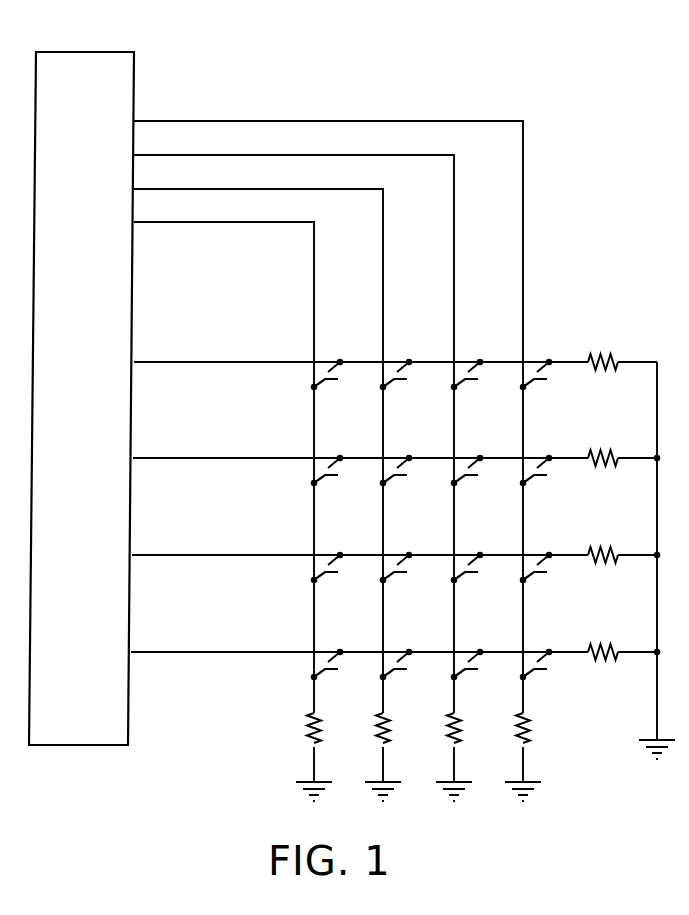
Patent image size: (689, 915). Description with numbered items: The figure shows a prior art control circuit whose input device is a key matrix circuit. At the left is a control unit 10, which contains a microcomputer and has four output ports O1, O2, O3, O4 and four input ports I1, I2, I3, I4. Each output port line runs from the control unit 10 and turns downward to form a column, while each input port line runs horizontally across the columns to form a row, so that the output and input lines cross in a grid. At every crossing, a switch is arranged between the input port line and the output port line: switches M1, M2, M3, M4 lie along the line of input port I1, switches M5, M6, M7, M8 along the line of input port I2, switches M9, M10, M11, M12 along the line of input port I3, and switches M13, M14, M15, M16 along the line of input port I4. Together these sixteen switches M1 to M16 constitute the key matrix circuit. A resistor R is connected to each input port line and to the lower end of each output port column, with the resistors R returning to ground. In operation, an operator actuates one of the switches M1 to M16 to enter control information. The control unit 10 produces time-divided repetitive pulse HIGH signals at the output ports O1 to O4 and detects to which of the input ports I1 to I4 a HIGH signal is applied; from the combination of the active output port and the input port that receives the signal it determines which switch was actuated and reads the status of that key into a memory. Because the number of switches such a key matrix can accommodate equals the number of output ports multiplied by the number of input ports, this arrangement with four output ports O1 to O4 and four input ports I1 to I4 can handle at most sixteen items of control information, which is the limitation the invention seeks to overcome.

The control unit 10 is at (107, 52).
The output port O1 is at (206, 460).
The output port O2 is at (240, 444).
The output port O3 is at (276, 427).
The output port O4 is at (310, 410).
The input port I1 is at (377, 363).
The input port I2 is at (377, 459).
The input port I3 is at (377, 556).
The input port I4 is at (377, 653).
The resistor R is at (598, 356).
The switch M1 is at (332, 385).
The switch M2 is at (401, 385).
The switch M3 is at (472, 385).
The switch M4 is at (541, 385).
The switch M5 is at (332, 481).
The switch M6 is at (401, 481).
The switch M7 is at (472, 481).
The switch M8 is at (541, 481).
The switch M9 is at (332, 578).
The switch M10 is at (401, 578).
The switch M11 is at (472, 578).
The switch M12 is at (541, 578).
The switch M13 is at (332, 675).
The switch M14 is at (401, 675).
The switch M15 is at (472, 675).
The switch M16 is at (541, 675).